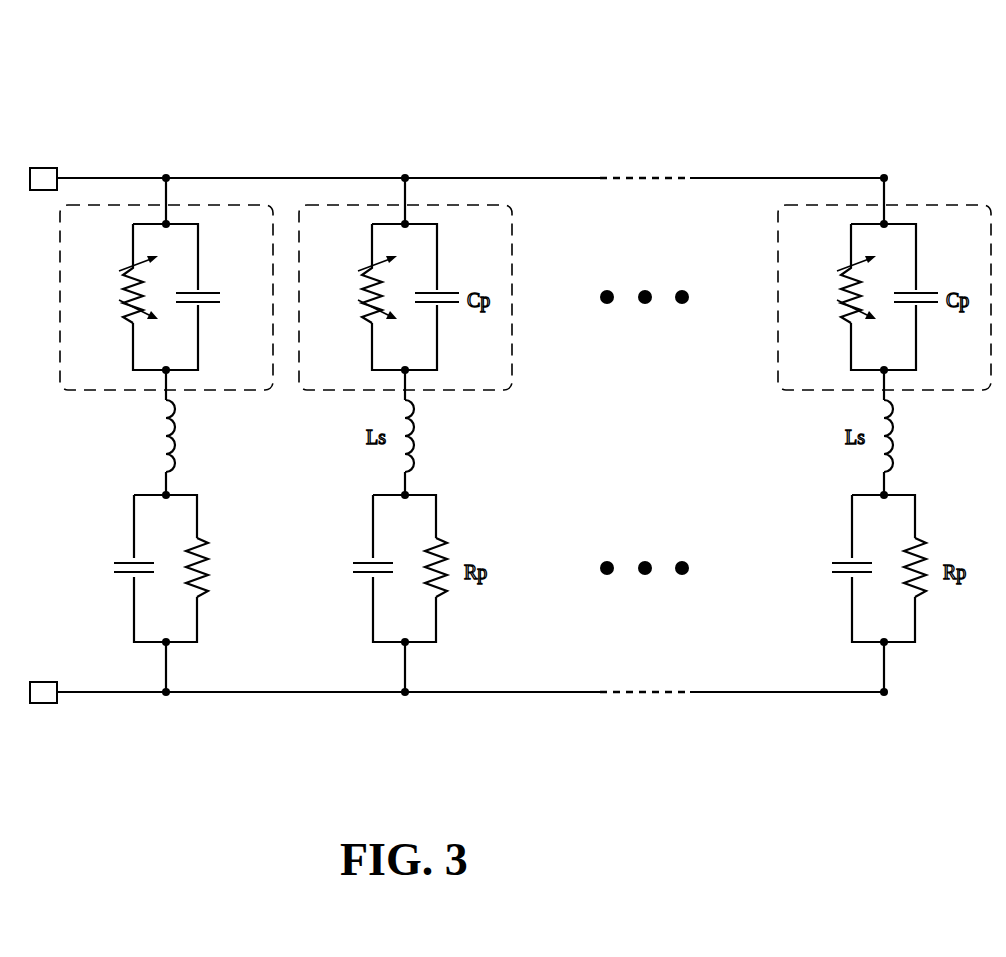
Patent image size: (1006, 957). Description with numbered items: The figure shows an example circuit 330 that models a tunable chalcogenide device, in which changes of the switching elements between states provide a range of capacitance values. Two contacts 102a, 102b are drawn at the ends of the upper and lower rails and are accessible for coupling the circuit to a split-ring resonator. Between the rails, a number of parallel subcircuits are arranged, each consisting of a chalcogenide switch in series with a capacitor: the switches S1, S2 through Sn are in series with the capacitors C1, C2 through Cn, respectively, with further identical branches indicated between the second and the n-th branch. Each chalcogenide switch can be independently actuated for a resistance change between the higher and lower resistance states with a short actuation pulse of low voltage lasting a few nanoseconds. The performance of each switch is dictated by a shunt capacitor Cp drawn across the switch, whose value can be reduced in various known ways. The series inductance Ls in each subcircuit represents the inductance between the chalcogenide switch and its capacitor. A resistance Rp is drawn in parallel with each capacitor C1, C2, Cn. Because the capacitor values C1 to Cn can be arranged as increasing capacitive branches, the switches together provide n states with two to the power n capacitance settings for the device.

The contact 102a is at (36, 168).
The contact 102b is at (44, 703).
The circuit 330 is at (407, 113).
The switch S1 is at (119, 273).
The switch S2 is at (358, 273).
The switch Sn is at (837, 273).
The shunt capacitor Cp is at (213, 300).
The series inductance Ls is at (151, 436).
The capacitor C1 is at (112, 570).
The capacitor C2 is at (351, 570).
The capacitor Cn is at (830, 570).
The parallel resistance Rp is at (217, 567).